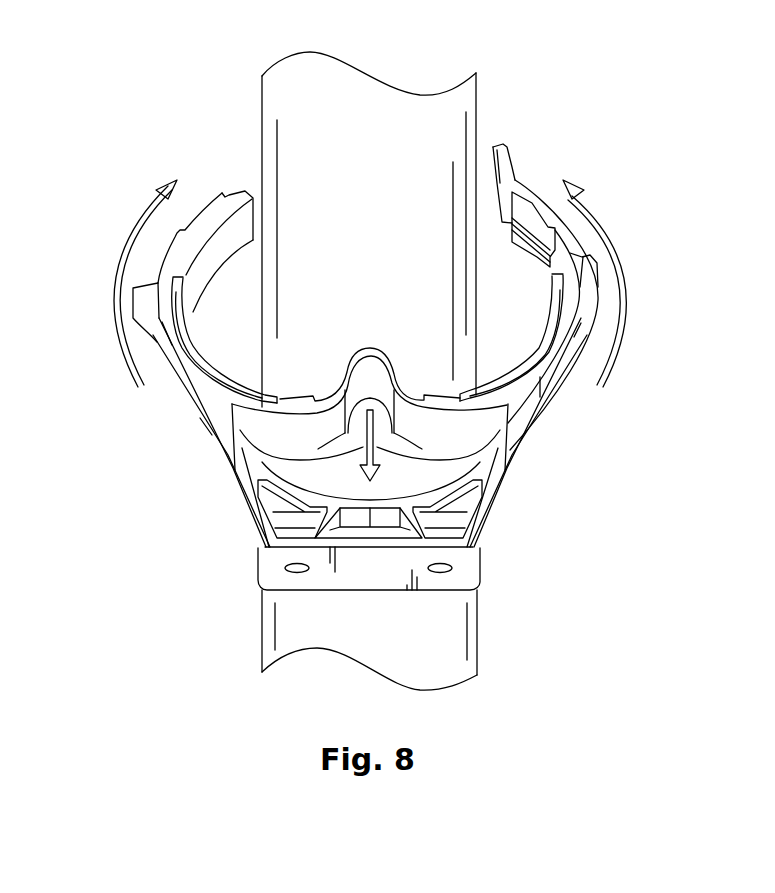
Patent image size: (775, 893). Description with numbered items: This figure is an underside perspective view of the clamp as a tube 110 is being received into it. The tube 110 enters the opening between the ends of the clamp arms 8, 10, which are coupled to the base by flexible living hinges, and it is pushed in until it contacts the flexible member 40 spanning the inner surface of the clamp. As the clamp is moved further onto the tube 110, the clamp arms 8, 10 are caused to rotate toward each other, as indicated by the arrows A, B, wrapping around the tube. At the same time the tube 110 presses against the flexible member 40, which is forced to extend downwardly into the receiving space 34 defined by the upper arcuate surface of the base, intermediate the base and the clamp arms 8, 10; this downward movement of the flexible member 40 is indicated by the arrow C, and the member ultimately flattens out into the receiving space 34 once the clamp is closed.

The tube 110 is at (280, 103).
The clamp arm 8 is at (183, 409).
The clamp arm 10 is at (557, 404).
The receiving space 34 is at (412, 475).
The flexible member 40 is at (372, 344).
The arrow A is at (120, 247).
The arrow B is at (612, 238).
The arrow C is at (393, 443).